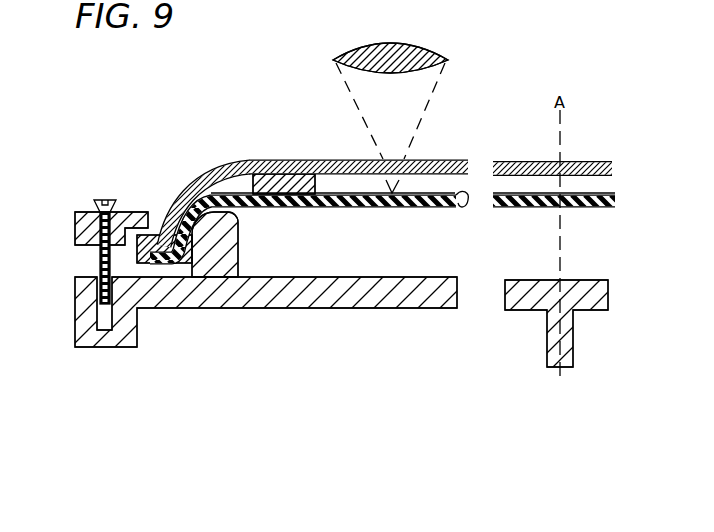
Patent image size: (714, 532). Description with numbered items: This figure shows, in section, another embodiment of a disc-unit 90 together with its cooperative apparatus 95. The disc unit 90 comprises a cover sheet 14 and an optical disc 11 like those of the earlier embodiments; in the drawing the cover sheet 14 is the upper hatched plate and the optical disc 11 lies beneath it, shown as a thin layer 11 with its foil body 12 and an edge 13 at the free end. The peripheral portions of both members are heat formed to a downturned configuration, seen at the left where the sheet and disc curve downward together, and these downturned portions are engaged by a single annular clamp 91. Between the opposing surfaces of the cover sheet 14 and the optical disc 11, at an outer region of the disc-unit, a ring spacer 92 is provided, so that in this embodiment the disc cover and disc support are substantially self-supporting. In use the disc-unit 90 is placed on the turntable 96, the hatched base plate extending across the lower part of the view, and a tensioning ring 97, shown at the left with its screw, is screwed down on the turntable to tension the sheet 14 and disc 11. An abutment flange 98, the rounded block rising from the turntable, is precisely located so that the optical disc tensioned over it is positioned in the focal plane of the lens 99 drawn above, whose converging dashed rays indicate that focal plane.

The optical disc 11 is at (390, 206).
The flexible foil 12 is at (432, 208).
The bent foil edge 13 is at (466, 208).
The cover sheet 14 is at (290, 159).
The disc-unit 90 is at (205, 158).
The annular clamp 91 is at (150, 265).
The ring spacer 92 is at (297, 195).
The cooperative apparatus 95 is at (452, 326).
The turntable 96 is at (303, 296).
The tensioning ring 97 is at (75, 232).
The abutment flange 98 is at (238, 252).
The lens 99 is at (427, 44).